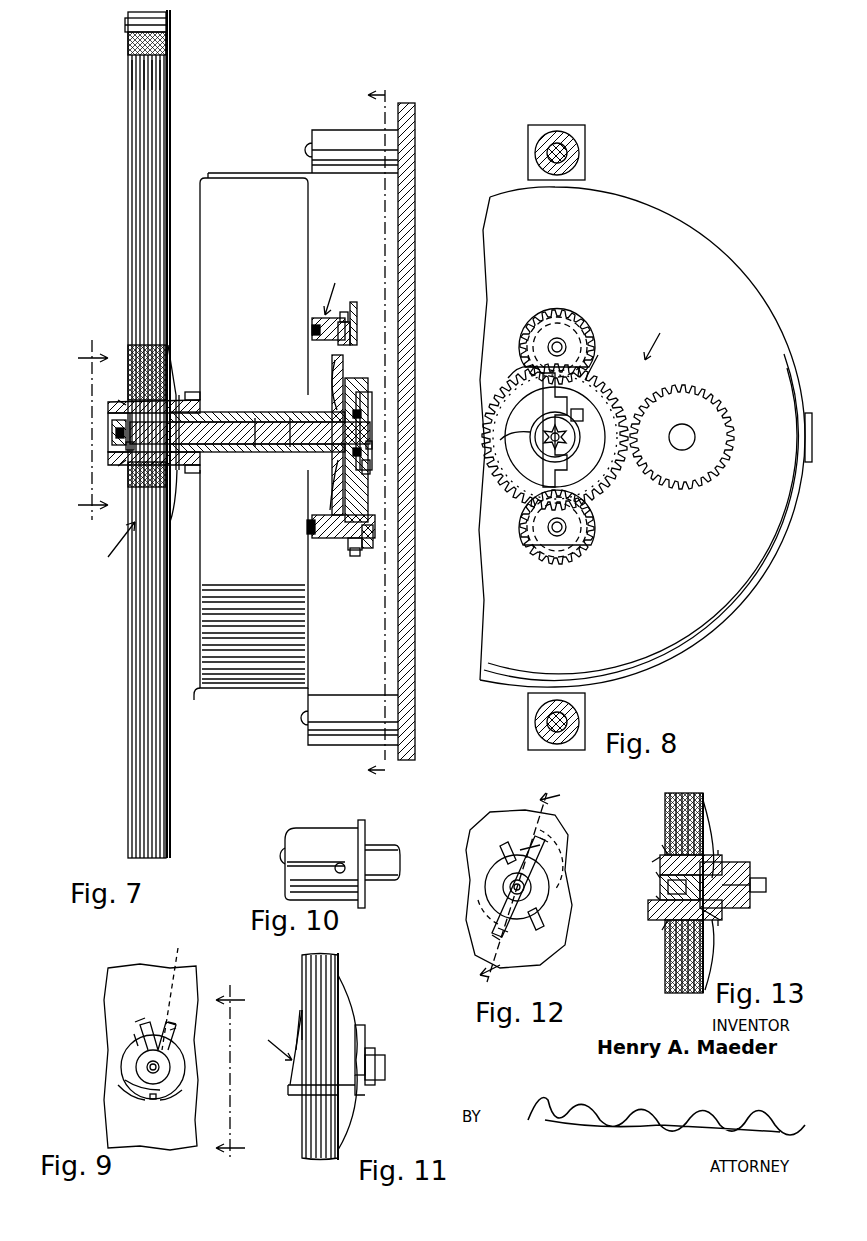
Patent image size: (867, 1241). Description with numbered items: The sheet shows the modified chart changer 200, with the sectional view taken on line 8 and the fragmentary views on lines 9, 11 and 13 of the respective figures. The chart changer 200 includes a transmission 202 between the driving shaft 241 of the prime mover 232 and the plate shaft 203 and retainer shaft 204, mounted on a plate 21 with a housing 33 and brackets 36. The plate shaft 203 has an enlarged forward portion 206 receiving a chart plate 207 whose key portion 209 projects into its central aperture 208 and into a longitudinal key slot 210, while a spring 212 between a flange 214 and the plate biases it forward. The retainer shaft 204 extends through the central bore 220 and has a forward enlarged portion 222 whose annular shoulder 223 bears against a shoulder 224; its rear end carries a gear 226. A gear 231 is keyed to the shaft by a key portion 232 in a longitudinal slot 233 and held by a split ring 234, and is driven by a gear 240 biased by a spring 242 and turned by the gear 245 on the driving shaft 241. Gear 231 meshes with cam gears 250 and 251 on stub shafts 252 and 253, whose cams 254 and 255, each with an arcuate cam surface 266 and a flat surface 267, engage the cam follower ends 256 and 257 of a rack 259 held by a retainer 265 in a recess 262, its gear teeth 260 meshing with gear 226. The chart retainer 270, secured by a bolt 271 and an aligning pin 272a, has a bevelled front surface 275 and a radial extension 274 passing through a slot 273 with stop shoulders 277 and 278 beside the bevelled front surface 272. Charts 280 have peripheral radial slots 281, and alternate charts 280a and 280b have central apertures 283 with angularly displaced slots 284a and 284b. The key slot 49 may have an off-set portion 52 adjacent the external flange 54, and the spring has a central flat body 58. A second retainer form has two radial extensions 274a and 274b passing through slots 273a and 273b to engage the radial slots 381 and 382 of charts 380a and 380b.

In FIG. 7, the section line 8— 8 is at (386, 432).
In FIG. 7, the section line 9— 9 is at (84, 431).
In FIG. 9, the section line 11— 11 is at (236, 1074).
In FIG. 12, the section line 13— 13 is at (529, 892).
In FIG. 7, the mounting plate 21 is at (415, 362).
In FIG. 7, the housing 33 is at (264, 160).
In FIG. 7, the bracket flange 36 is at (326, 138).
In FIG. 10, the key slot 49 is at (290, 845).
In FIG. 10, the off-set portion 52 is at (345, 865).
In FIG. 10, the external flange 54 is at (364, 826).
In FIG. 11, the central flat body 58 is at (366, 1045).
In FIG. 7, the chart changer 200 is at (105, 540).
In FIG. 7, the transmission 202 is at (331, 289).
In FIG. 8, the transmission 202 is at (660, 338).
In FIG. 7, the plate shaft 203 is at (242, 412).
In FIG. 11, the plate shaft 203 is at (378, 1082).
In FIG. 13, the plate shaft 203 is at (750, 872).
In FIG. 7, the retainer shaft 204 is at (262, 425).
In FIG. 11, the retainer shaft 204 is at (385, 1060).
In FIG. 13, the retainer shaft 204 is at (760, 892).
In FIG. 7, the enlarged forward portion 206 is at (118, 403).
In FIG. 9, the enlarged forward portion 206 is at (185, 1090).
In FIG. 11, the enlarged forward portion 206 is at (293, 1096).
In FIG. 13, the enlarged forward portion 206 is at (718, 852).
In FIG. 7, the chart plate 207 is at (170, 135).
In FIG. 11, the chart plate 207 is at (340, 964).
In FIG. 13, the chart plate 207 is at (704, 797).
In FIG. 7, the central aperture 208 is at (178, 360).
In FIG. 7, the key portion 209 is at (128, 488).
In FIG. 7, the longitudinal key slot 210 is at (128, 470).
In FIG. 9, the longitudinal key slot 210 is at (150, 1075).
In FIG. 12, the longitudinal key slot 210 is at (488, 886).
In FIG. 7, the spring 212 is at (180, 490).
In FIG. 11, the spring 212 is at (358, 1015).
In FIG. 13, the spring 212 is at (716, 950).
In FIG. 7, the flange 214 is at (182, 395).
In FIG. 11, the flange 214 is at (362, 1100).
In FIG. 13, the flange 214 is at (718, 852).
In FIG. 7, the central bore 220 is at (262, 452).
In FIG. 7, the forward enlarged portion 222 is at (125, 464).
In FIG. 13, the forward enlarged portion 222 is at (722, 900).
In FIG. 7, the annular shoulder 223 is at (198, 466).
In FIG. 13, the annular shoulder 223 is at (715, 905).
In FIG. 7, the shoulder 224 is at (195, 403).
In FIG. 7, the gear 226 is at (361, 414).
In FIG. 7, the gear 231 is at (368, 505).
In FIG. 8, the gear 231 is at (610, 400).
In FIG. 7, the prime mover 232 is at (426, 400).
In FIG. 8, the prime mover 232 is at (735, 598).
In FIG. 7, the longitudinal slot 233 is at (372, 398).
In FIG. 7, the split ring 234 is at (370, 470).
In FIG. 7, the gear 240 is at (332, 500).
In FIG. 8, the gear 240 is at (515, 495).
In FIG. 7, the driving shaft 241 is at (350, 545).
In FIG. 8, the driving shaft 241 is at (690, 420).
In FIG. 7, the spring 242 is at (335, 365).
In FIG. 8, the gear 245 is at (735, 418).
In FIG. 7, the cam gear 250 is at (344, 320).
In FIG. 8, the cam gear 250 is at (567, 322).
In FIG. 7, the cam gear 251 is at (356, 556).
In FIG. 8, the cam gear 251 is at (560, 548).
In FIG. 7, the stub shaft 252 is at (312, 328).
In FIG. 8, the stub shaft 252 is at (552, 345).
In FIG. 7, the stub shaft 253 is at (312, 530).
In FIG. 8, the stub shaft 253 is at (553, 535).
In FIG. 7, the cam 254 is at (353, 302).
In FIG. 8, the cam 254 is at (535, 320).
In FIG. 7, the cam 255 is at (368, 548).
In FIG. 8, the cam 255 is at (593, 535).
In FIG. 8, the cam follower end 256 is at (512, 372).
In FIG. 7, the cam follower end 257 is at (372, 446).
In FIG. 8, the cam follower end 257 is at (500, 455).
In FIG. 8, the rack 259 is at (590, 450).
In FIG. 8, the gear teeth 260 is at (575, 432).
In FIG. 8, the recess 262 is at (580, 480).
In FIG. 8, the retainer 265 is at (598, 392).
In FIG. 8, the arcuate cam surface 266 is at (565, 308).
In FIG. 8, the flat surface 267 is at (590, 360).
In FIG. 7, the chart retainer 270 is at (108, 455).
In FIG. 9, the chart retainer 270 is at (180, 1060).
In FIG. 11, the chart retainer 270 is at (271, 1039).
In FIG. 7, the bolt 271 is at (112, 445).
In FIG. 9, the bolt 271 is at (158, 1098).
In FIG. 13, the bolt 271 is at (670, 892).
In FIG. 9, the front surface 272 is at (118, 1090).
In FIG. 11, the front surface 272 is at (292, 1070).
In FIG. 13, the front surface 272 is at (660, 885).
In FIG. 7, the aligning pin 272a is at (116, 433).
In FIG. 9, the slot 273 is at (150, 1022).
In FIG. 12, the slot 273a is at (520, 855).
In FIG. 12, the slot 273b is at (545, 912).
In FIG. 7, the radial extension 274 is at (128, 376).
In FIG. 9, the radial extension 274 is at (172, 1022).
In FIG. 11, the radial extension 274 is at (300, 1020).
In FIG. 12, the radial extension 274a is at (545, 843).
In FIG. 13, the radial extension 274a is at (664, 850).
In FIG. 12, the radial extension 274b is at (505, 940).
In FIG. 13, the radial extension 274b is at (665, 925).
In FIG. 7, the front surface 275 is at (135, 22).
In FIG. 9, the front surface 275 is at (140, 1058).
In FIG. 11, the front surface 275 is at (296, 1055).
In FIG. 13, the front surface 275 is at (660, 862).
In FIG. 9, the stop shoulder 277 is at (132, 1034).
In FIG. 9, the stop shoulder 278 is at (178, 1036).
In FIG. 7, the charts 280 is at (128, 735).
In FIG. 11, the charts 280 is at (300, 970).
In FIG. 7, the charts 280a is at (136, 77).
In FIG. 9, the charts 280a is at (108, 1118).
In FIG. 7, the charts 280b is at (140, 95).
In FIG. 7, the peripheral radial slots 281 is at (128, 38).
In FIG. 9, the central apertures 283 is at (122, 1082).
In FIG. 9, the radial slot 284a is at (135, 1020).
In FIG. 9, the radial slot 284b is at (174, 995).
In FIG. 12, the charts 380a is at (472, 938).
In FIG. 13, the charts 380a is at (670, 798).
In FIG. 13, the charts 380b is at (672, 992).
In FIG. 12, the radial slot 381 is at (500, 846).
In FIG. 12, the radial slot 382 is at (460, 906).